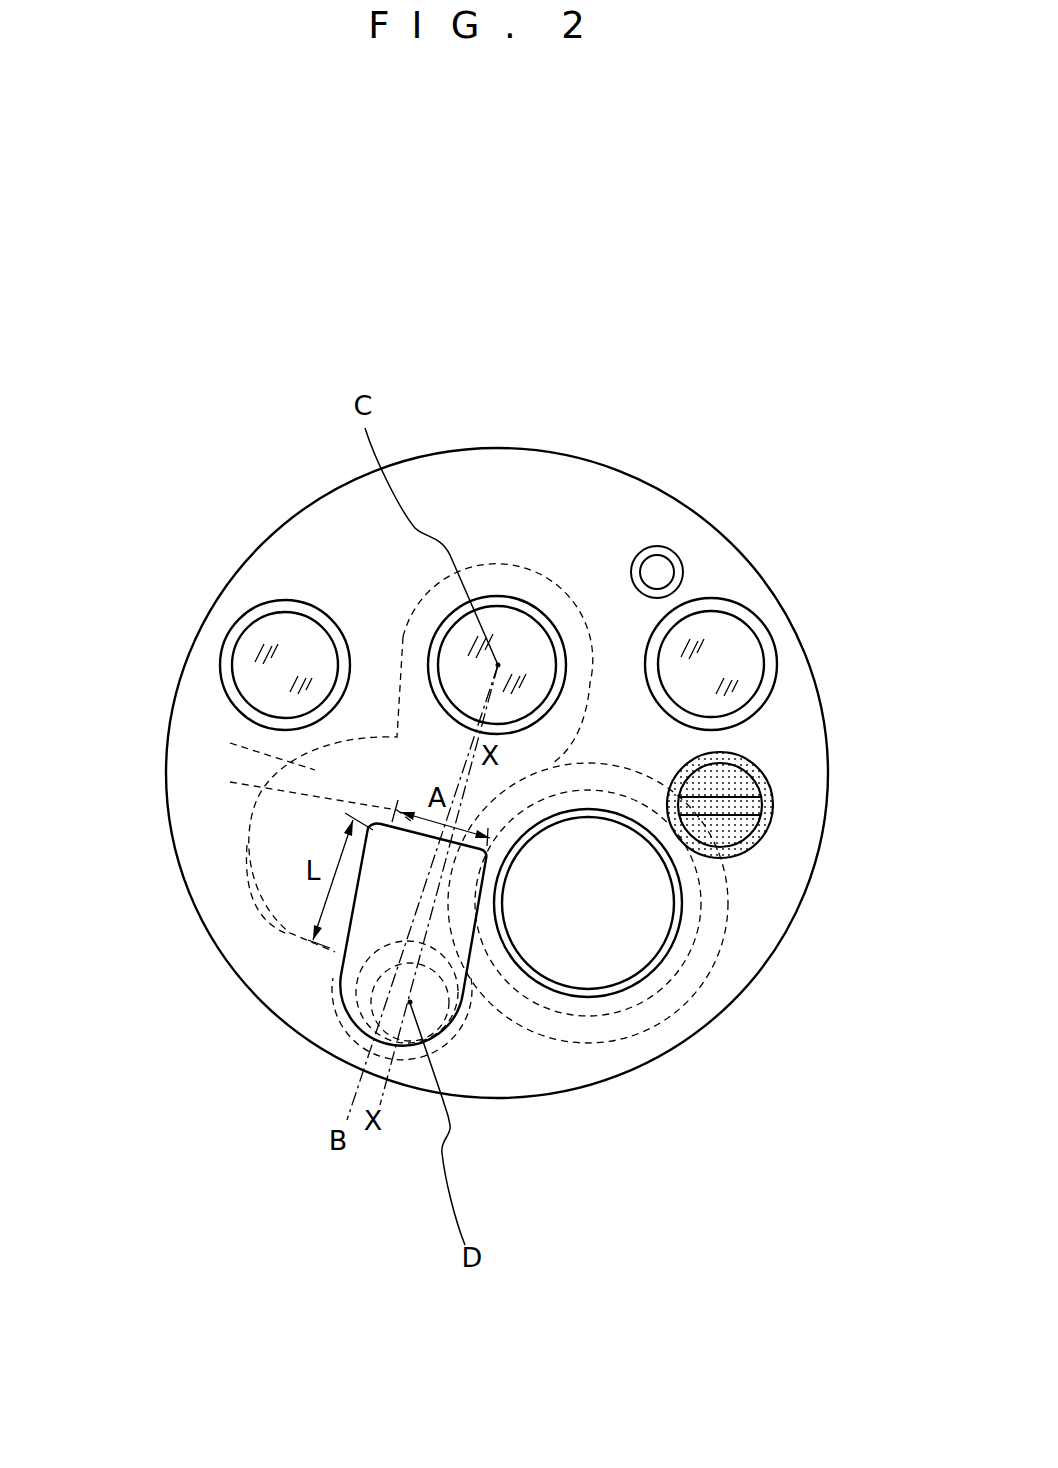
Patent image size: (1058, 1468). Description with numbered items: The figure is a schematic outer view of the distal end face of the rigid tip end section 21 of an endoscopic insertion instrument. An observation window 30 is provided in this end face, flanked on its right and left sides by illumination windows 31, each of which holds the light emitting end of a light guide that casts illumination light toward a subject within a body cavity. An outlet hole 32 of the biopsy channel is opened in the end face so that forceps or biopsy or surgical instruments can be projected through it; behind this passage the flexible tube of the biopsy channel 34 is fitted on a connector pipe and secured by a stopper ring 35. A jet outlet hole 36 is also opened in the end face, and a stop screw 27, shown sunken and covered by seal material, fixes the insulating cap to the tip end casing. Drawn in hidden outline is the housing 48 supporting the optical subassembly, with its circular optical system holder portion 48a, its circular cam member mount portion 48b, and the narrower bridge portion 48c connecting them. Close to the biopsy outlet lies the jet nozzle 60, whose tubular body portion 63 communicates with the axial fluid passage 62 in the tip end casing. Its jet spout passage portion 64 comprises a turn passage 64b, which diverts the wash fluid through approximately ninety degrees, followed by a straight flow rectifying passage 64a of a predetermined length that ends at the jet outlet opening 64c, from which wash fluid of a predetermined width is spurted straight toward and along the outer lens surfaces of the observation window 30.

The rigid tip end section 21 is at (517, 440).
The stop screw 27 is at (765, 832).
The observation window 30 is at (525, 630).
The illumination windows 31 is at (263, 636).
The outlet hole of biopsy channel 32 is at (628, 947).
The biopsy channel 34 is at (600, 1007).
The stopper ring 35 is at (717, 937).
The jet outlet hole 36 is at (657, 567).
The housing 48 is at (380, 678).
The optical system holder portion 48a is at (482, 560).
The cam member mount portion 48b is at (243, 852).
The bridge portion 48c is at (230, 743).
The jet nozzle 60 is at (318, 966).
The fluid passage 62 is at (445, 1032).
The tubular body portion 63 is at (407, 1065).
The jet spout passage portion 64 is at (323, 994).
The flow rectifying passage 64a is at (476, 1030).
The turn passage 64b is at (337, 973).
The jet outlet opening 64c is at (230, 782).